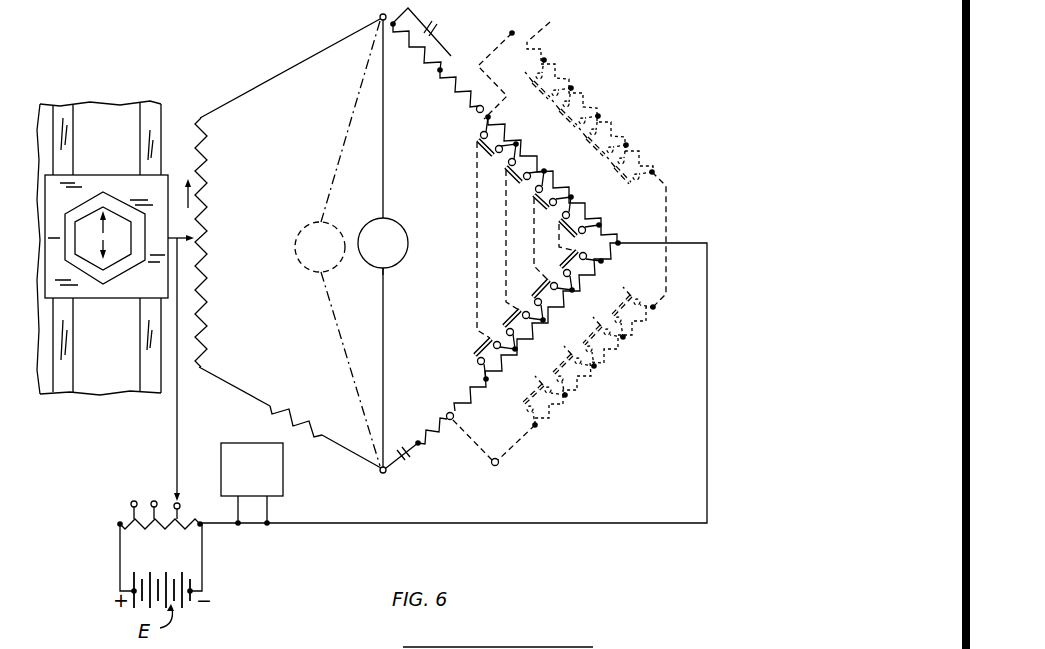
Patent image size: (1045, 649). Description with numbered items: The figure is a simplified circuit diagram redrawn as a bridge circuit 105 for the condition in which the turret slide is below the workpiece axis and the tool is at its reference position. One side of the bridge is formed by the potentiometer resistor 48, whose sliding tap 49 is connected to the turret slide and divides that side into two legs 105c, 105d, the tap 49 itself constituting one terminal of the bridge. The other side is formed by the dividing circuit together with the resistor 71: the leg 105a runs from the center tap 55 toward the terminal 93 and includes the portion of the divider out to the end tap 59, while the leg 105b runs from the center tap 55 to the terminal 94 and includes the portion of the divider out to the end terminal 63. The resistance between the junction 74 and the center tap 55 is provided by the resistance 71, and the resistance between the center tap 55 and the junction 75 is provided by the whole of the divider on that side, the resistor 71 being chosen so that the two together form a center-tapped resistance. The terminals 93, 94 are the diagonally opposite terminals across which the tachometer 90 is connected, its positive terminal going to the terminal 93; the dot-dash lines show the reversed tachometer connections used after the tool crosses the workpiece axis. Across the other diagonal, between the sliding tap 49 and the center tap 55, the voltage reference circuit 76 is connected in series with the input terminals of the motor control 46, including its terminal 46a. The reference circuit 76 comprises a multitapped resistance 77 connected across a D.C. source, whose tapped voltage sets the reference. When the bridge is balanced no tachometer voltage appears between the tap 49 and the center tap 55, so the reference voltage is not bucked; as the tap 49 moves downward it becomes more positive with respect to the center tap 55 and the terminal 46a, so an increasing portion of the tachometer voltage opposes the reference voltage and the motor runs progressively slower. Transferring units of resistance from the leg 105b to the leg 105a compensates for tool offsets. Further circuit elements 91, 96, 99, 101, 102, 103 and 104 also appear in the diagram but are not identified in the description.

The motor control 46 is at (253, 420).
The terminal of the motor control circuit 46a is at (268, 522).
The potentiometer resistor 48 is at (210, 280).
The sliding tap 49 is at (181, 240).
The center tap 55 is at (617, 242).
The end tap 59 is at (483, 377).
The end terminal 63 is at (480, 136).
The resistor 71 is at (457, 398).
The junction 74 is at (511, 31).
The junction 75 is at (476, 111).
The voltage reference circuit 76 is at (118, 514).
The multitapped resistance 77 is at (145, 528).
The tachometer 90 is at (403, 252).
The resistor 91 is at (318, 432).
The terminal 93 is at (381, 473).
The terminal 94 is at (378, 17).
The meter 96 is at (385, 219).
The meter terminal 99 is at (388, 270).
The switch 101 is at (405, 468).
The resistor 102 is at (428, 445).
The resistor 103 is at (410, 50).
The resistor 104 is at (445, 74).
The bridge circuit 105 is at (292, 187).
The bridge leg 105a is at (513, 372).
The bridge leg 105b is at (540, 135).
The bridge leg 105c is at (233, 121).
The bridge leg 105d is at (209, 325).